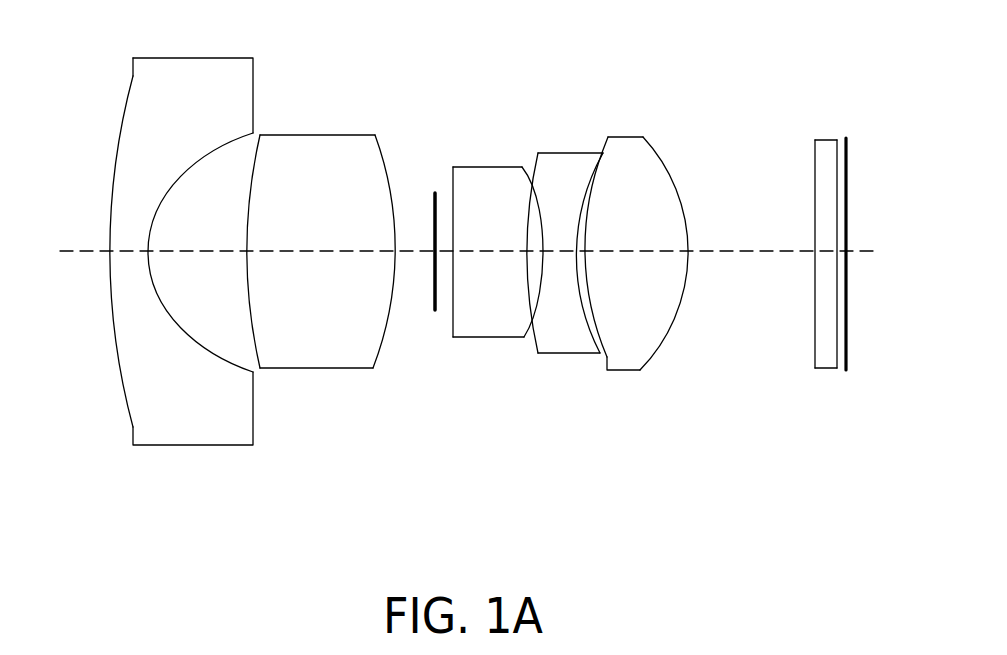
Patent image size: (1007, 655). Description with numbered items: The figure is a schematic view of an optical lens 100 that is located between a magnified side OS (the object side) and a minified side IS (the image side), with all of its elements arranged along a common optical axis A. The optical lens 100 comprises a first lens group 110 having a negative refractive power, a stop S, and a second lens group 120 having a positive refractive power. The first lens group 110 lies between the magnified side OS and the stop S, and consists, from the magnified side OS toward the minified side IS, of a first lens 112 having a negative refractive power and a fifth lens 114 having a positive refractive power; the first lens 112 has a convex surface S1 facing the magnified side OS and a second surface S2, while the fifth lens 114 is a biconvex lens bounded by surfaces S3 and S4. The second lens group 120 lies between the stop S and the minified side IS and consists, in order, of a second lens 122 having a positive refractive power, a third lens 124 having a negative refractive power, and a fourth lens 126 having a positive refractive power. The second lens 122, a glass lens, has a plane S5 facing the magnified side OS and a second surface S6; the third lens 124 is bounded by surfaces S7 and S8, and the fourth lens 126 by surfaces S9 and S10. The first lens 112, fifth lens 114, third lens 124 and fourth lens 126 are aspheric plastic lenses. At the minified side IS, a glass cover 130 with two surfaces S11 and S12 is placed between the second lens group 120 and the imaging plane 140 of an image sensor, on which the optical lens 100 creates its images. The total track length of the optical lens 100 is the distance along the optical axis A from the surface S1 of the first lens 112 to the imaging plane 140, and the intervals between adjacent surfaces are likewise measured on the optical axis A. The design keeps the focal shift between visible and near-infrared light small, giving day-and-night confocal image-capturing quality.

The optical lens 100 is at (870, 539).
The first lens group 110 is at (330, 520).
The first lens 112 is at (170, 266).
The fifth lens 114 is at (322, 282).
The second lens group 120 is at (658, 455).
The second lens 122 is at (481, 248).
The third lens 124 is at (564, 248).
The fourth lens 126 is at (636, 256).
The glass cover 130 is at (813, 257).
The imaging plane 140 is at (847, 345).
The stop S is at (432, 293).
The optical axis A is at (85, 252).
The magnified side OS is at (36, 252).
The minified side IS is at (894, 255).
The surface of the first lens facing the magnified side S1 is at (125, 107).
The surface of the first lens facing the minified side S2 is at (192, 179).
The surface of the fifth lens facing the magnified side S3 is at (248, 200).
The surface of the fifth lens facing the minified side S4 is at (392, 195).
The plane surface of the second lens S5 is at (453, 188).
The surface of the second lens facing the minified side S6 is at (529, 177).
The surface of the third lens facing the magnified side S7 is at (546, 205).
The surface of the third lens facing the minified side S8 is at (587, 187).
The surface of the fourth lens facing the magnified side S9 is at (600, 150).
The surface of the fourth lens facing the minified side S10 is at (673, 183).
The surface of the glass cover facing the magnified side S11 is at (815, 173).
The surface of the glass cover facing the minified side S12 is at (839, 160).